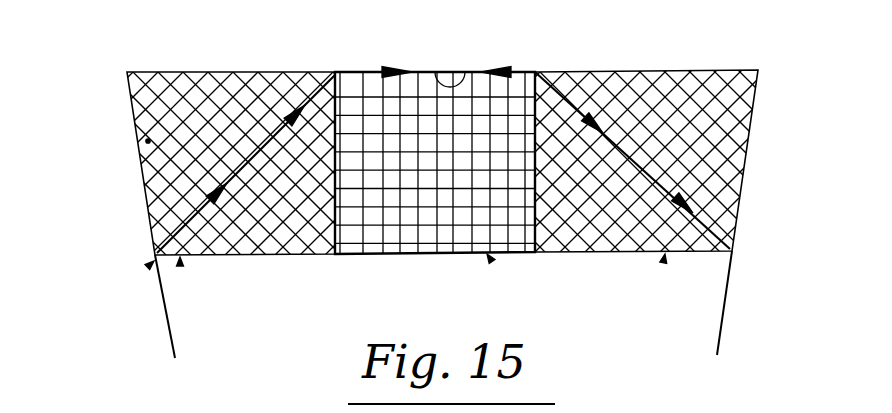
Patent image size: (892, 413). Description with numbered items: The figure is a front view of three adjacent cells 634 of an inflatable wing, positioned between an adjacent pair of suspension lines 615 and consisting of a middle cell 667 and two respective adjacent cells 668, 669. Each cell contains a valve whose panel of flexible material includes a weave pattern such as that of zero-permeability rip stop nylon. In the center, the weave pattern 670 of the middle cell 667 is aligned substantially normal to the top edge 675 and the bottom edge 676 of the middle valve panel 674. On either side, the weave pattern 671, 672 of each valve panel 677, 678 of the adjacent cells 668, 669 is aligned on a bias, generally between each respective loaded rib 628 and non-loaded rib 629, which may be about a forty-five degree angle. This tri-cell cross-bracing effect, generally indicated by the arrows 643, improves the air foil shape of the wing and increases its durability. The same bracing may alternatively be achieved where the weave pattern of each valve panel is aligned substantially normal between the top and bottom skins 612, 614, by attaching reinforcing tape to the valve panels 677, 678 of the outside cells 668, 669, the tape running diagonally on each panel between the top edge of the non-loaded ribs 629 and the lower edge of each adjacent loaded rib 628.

The top skin 612 is at (413, 97).
The bottom skin 614 is at (410, 255).
The suspension lines 615 is at (172, 337).
The loaded rib 628 is at (145, 195).
The non-loaded rib 629 is at (333, 220).
The three adjacent cells 634 is at (152, 263).
The arrows 643 is at (305, 82).
The middle cell 667 is at (489, 258).
The adjacent cell 668 is at (180, 260).
The adjacent cell 669 is at (664, 258).
The weave pattern 670 is at (470, 108).
The weave pattern 671 is at (218, 100).
The weave pattern 672 is at (677, 107).
The middle valve panel 674 is at (412, 72).
The top edge 675 is at (435, 72).
The bottom edge 676 is at (455, 255).
The valve panel 677 is at (148, 141).
The valve panel 678 is at (722, 120).